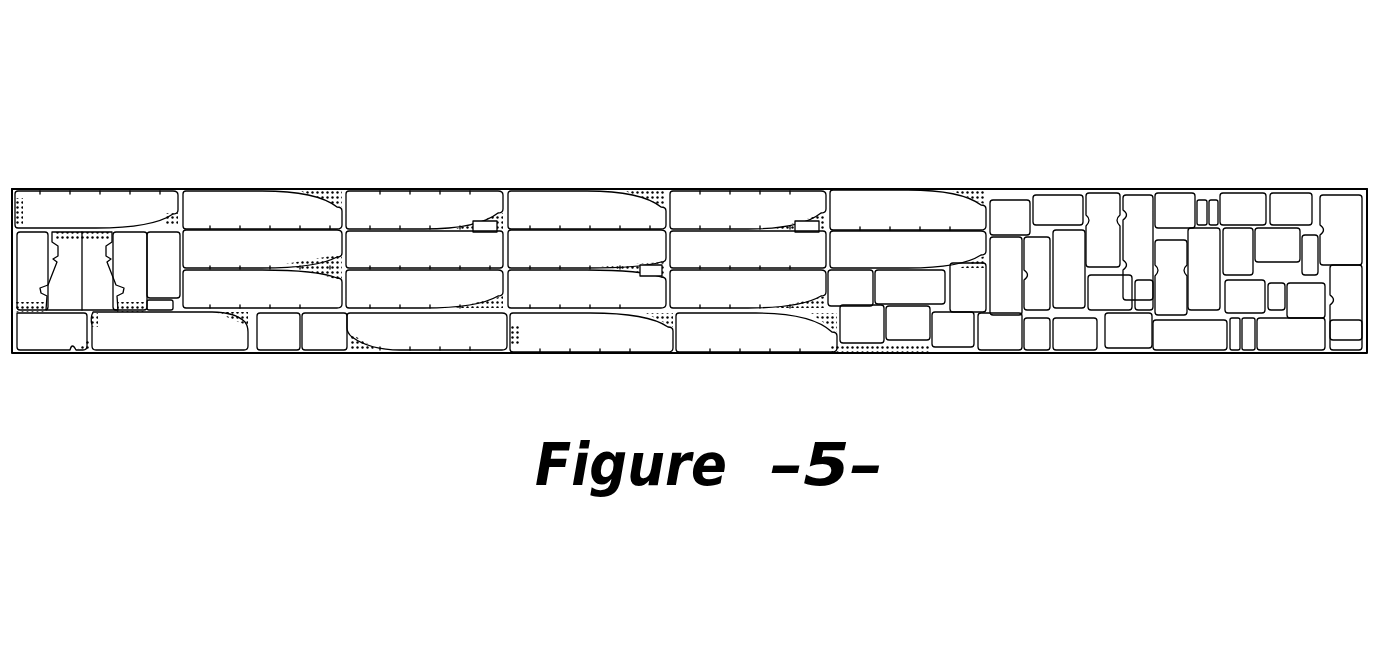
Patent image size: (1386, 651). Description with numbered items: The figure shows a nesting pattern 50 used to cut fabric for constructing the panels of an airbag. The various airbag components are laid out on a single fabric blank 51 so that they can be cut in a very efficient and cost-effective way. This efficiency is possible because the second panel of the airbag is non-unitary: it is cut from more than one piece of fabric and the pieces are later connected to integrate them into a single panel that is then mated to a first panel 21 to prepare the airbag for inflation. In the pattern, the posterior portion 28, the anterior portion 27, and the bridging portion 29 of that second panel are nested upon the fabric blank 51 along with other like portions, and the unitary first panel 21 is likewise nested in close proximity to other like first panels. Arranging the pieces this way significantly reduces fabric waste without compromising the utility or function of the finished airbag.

The nesting pattern 50 is at (918, 107).
The fabric blank 51 is at (382, 189).
The first panel 21 is at (747, 205).
The anterior portion 27 is at (1285, 208).
The posterior portion 28 is at (1102, 208).
The bridging portion 29 is at (1167, 223).